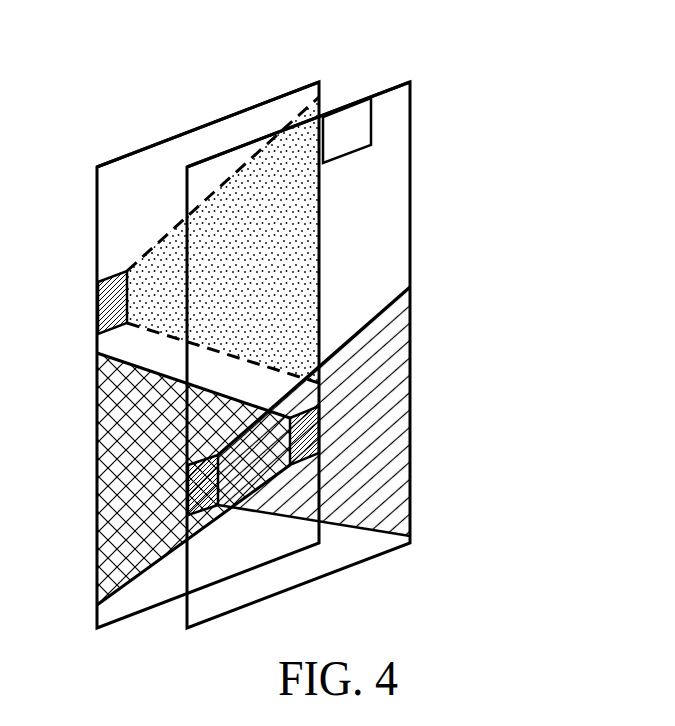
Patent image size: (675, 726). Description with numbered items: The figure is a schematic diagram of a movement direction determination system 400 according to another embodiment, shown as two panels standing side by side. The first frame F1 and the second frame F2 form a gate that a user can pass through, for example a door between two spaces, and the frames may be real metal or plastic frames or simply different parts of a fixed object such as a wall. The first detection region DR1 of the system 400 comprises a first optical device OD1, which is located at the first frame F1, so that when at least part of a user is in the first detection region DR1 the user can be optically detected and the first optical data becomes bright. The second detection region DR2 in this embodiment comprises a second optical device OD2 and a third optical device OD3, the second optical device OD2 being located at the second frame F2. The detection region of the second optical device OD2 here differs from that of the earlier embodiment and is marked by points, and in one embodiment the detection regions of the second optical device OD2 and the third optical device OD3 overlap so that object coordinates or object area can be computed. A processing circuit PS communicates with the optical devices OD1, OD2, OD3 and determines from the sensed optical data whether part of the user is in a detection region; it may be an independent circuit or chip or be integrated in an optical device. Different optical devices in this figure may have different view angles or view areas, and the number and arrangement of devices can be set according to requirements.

The movement direction determination system 400 is at (522, 97).
The first frame F1 is at (412, 153).
The second frame F2 is at (96, 211).
The first detection region DR1 is at (392, 102).
The second detection region DR2 is at (278, 107).
The processing circuit PS is at (347, 130).
The first optical device OD1 is at (173, 530).
The second optical device OD2 is at (110, 306).
The third optical device OD3 is at (377, 390).